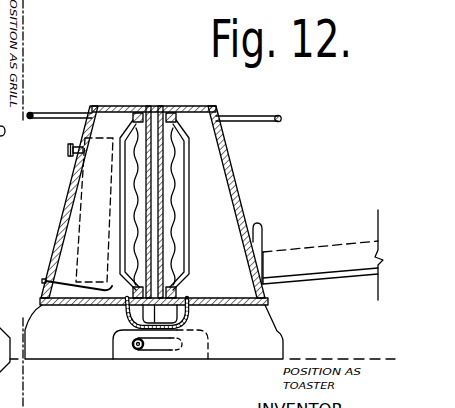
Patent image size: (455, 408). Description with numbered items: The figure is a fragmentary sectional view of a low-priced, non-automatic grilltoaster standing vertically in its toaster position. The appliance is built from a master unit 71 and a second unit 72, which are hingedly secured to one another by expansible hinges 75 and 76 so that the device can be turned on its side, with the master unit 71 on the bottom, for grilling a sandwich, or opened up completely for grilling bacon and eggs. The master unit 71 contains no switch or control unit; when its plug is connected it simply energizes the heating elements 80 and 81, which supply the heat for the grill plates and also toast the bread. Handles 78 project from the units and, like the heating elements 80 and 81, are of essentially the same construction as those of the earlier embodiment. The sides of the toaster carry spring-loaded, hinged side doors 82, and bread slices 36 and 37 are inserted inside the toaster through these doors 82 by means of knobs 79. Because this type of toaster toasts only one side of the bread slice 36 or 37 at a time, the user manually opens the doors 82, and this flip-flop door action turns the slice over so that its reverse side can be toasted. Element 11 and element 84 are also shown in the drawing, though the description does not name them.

The flexible cord 11 is at (125, 305).
The bread slice 36 is at (107, 219).
The bread slice 37 is at (319, 250).
The master unit 71 is at (120, 105).
The unit 72 is at (193, 106).
The expansible hinge 75 is at (60, 357).
The expansible hinge 76 is at (251, 361).
The handle 78 is at (40, 113).
The knob 79 is at (68, 150).
The heating element 80 is at (175, 178).
The heating element 81 is at (130, 136).
The hinged side door 82 is at (71, 191).
The element guard frame 84 is at (189, 241).